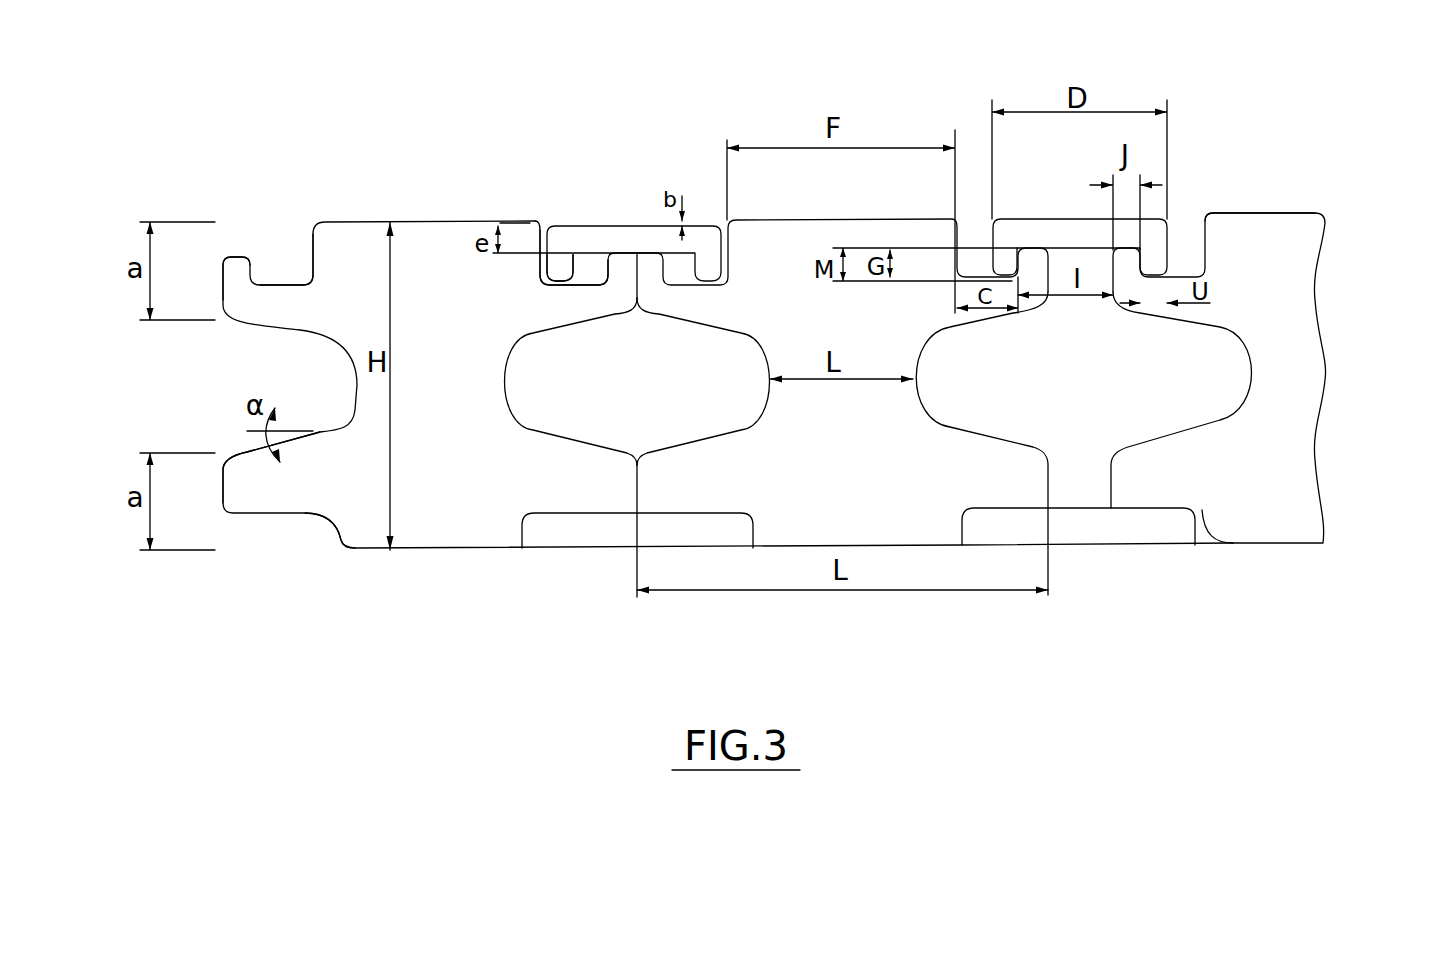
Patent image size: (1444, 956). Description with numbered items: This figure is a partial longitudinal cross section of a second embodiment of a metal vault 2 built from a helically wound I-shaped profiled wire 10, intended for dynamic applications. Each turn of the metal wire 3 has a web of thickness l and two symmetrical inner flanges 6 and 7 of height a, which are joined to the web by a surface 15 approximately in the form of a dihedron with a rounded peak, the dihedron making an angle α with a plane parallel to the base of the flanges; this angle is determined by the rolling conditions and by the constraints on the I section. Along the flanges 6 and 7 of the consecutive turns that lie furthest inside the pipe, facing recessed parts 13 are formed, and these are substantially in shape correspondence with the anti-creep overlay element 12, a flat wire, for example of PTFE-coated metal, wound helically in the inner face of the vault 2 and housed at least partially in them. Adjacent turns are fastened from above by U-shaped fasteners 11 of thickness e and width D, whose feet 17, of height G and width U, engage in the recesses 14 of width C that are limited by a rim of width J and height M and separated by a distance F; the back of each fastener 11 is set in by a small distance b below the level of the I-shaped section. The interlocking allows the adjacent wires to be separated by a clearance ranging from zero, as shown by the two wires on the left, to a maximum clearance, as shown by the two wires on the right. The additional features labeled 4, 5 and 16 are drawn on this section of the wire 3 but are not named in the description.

The vault 2 is at (1323, 148).
The metal wire 3 is at (440, 395).
The slot 4 is at (553, 308).
The body portion 5 is at (325, 305).
The inner flange 6 is at (602, 480).
The inner flange 7 is at (662, 477).
The wire 10 is at (1293, 233).
The fastener 11 is at (607, 236).
The anti-creep overlay element 12 is at (578, 537).
The recessed part 13 is at (278, 517).
The recess 14 is at (1187, 275).
The surface 15 is at (245, 452).
The upper hook 16 is at (233, 250).
The foot 17 is at (563, 270).